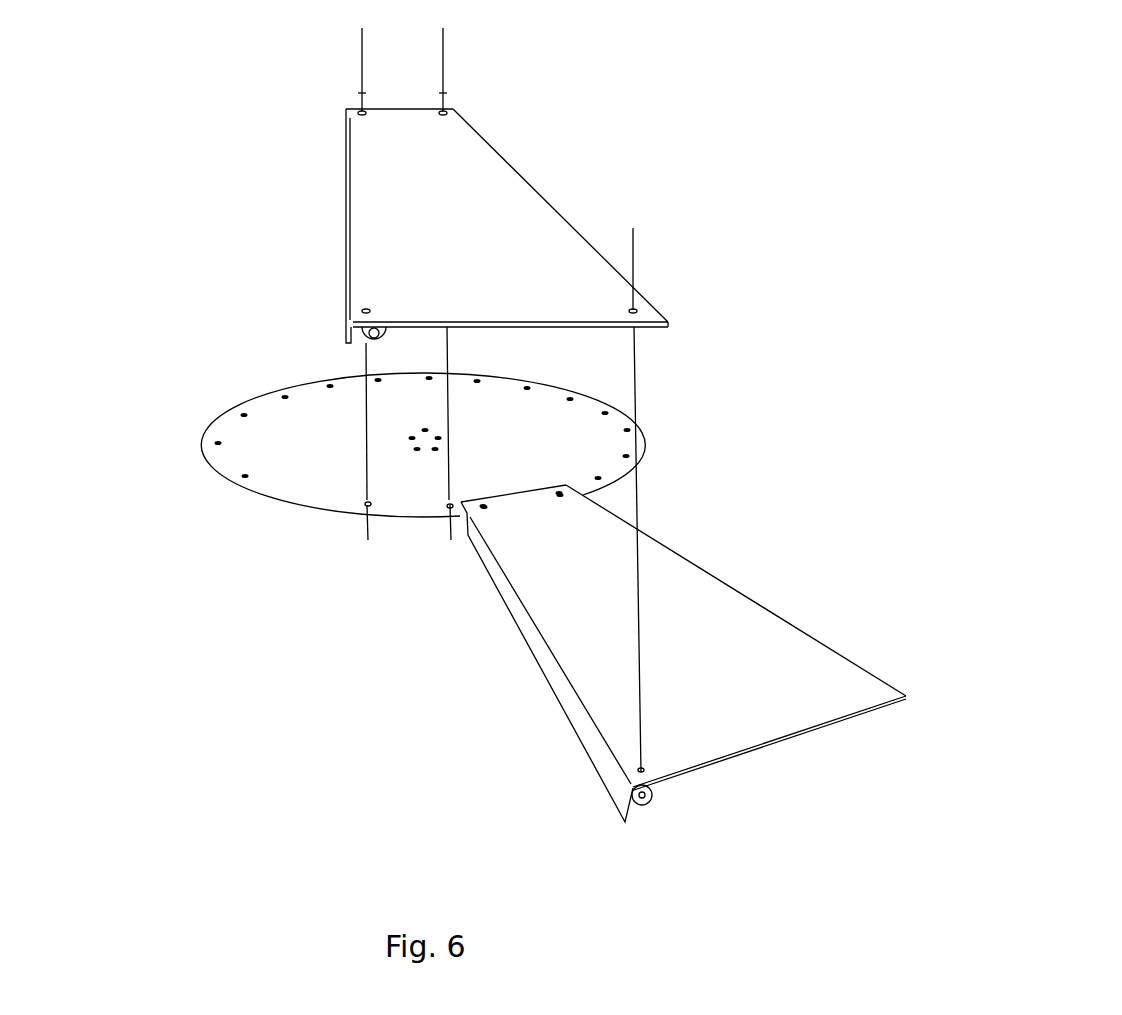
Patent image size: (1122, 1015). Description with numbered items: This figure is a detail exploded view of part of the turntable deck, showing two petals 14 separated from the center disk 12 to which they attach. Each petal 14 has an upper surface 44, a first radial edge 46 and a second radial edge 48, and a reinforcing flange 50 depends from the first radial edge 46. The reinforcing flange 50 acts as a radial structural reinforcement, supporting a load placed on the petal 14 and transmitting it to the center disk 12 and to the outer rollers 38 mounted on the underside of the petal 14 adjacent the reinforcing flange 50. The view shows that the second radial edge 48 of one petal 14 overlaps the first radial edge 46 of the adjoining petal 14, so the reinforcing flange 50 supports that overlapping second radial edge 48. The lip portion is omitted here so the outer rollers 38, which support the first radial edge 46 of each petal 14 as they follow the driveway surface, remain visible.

The center disk 12 is at (287, 452).
The petal 14 is at (590, 325).
The outer roller 38 is at (372, 338).
The upper surface 44 is at (449, 193).
The first radial edge 46 is at (348, 193).
The second radial edge 48 is at (541, 198).
The reinforcing flange 50 is at (346, 341).